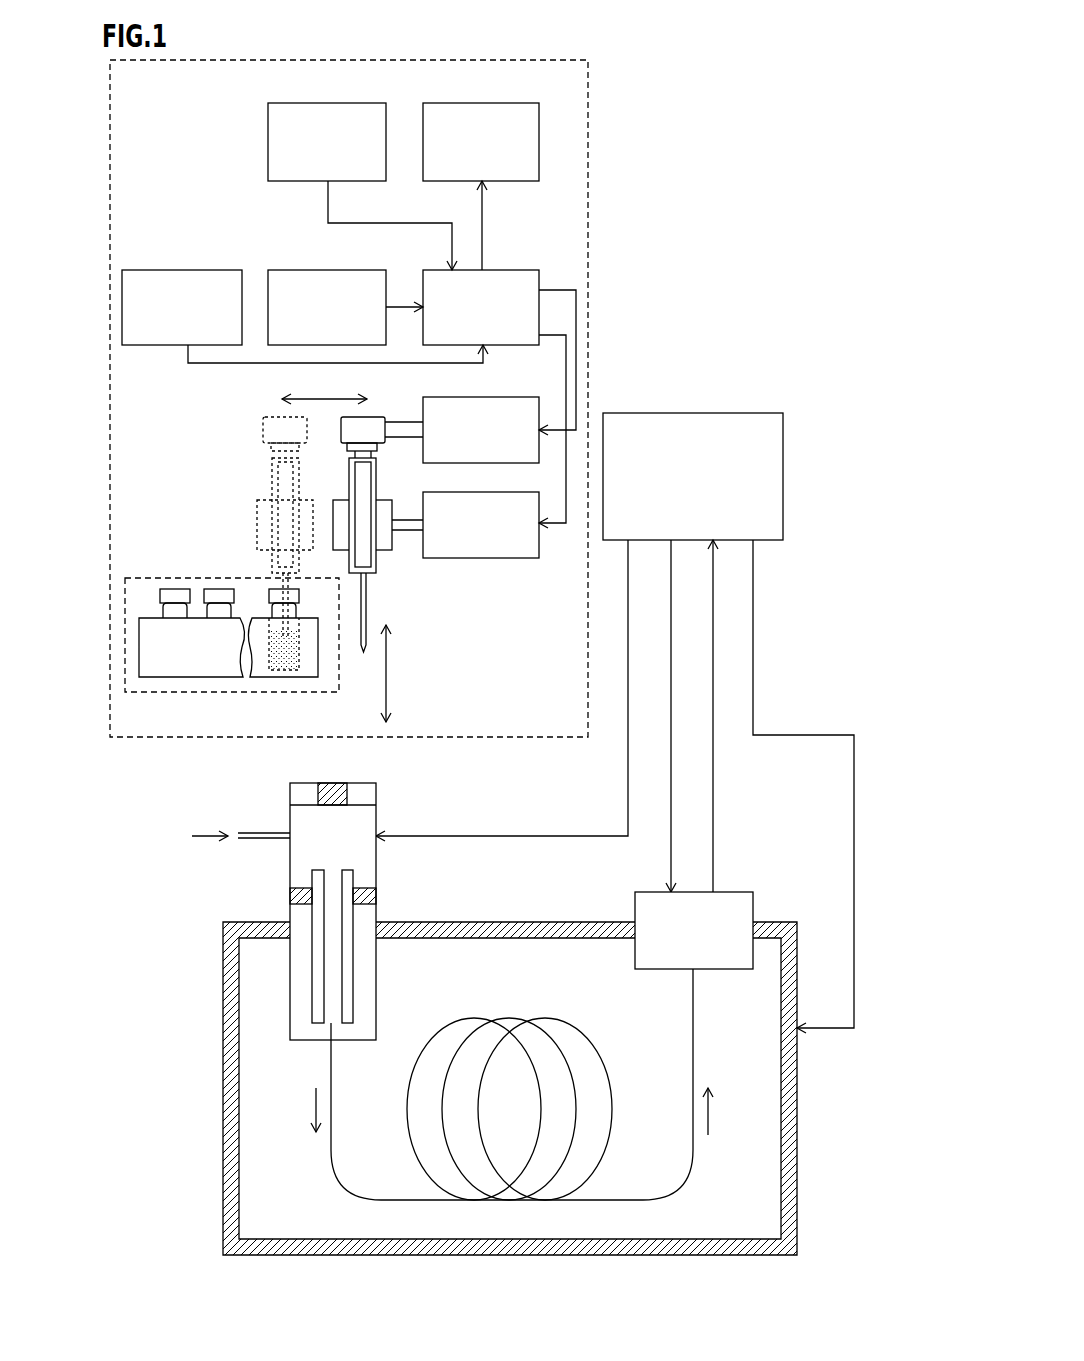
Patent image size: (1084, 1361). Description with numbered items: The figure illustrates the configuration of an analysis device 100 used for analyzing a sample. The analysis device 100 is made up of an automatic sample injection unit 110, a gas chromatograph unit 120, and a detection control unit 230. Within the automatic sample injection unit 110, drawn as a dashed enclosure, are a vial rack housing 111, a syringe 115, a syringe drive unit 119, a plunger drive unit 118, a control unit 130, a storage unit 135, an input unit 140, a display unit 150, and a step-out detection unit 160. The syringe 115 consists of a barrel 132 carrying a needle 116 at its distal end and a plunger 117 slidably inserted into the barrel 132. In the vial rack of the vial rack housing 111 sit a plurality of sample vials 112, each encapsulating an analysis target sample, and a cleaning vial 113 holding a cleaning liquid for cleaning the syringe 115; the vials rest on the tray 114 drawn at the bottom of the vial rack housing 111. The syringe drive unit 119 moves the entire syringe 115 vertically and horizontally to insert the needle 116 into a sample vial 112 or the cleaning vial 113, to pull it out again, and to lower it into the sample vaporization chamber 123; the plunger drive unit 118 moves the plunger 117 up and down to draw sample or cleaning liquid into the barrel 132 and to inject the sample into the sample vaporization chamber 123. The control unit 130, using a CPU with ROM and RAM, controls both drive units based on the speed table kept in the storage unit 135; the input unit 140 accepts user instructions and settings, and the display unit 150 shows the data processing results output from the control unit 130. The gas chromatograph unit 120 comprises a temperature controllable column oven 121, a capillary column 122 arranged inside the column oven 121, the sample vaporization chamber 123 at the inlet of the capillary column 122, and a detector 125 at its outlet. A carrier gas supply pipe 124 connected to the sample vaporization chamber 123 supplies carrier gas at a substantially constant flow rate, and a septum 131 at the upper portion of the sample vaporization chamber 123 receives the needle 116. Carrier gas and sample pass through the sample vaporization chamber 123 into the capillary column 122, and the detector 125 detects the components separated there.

The analysis device 100 is at (634, 335).
The automatic sample injection unit 110 is at (487, 58).
The vial rack housing 111 is at (143, 578).
The sample vial 112 is at (270, 595).
The cleaning vial 113 is at (172, 589).
The vial tray 114 is at (173, 677).
The syringe 115 is at (235, 438).
The needle 116 is at (367, 600).
The plunger 117 is at (377, 413).
The plunger drive unit 118 is at (483, 396).
The syringe drive unit 119 is at (483, 559).
The gas chromatograph unit 120 is at (514, 1028).
The column oven 121 is at (223, 1085).
The capillary column 122 is at (600, 1167).
The sample vaporization chamber 123 is at (377, 815).
The carrier gas supply pipe 124 is at (263, 843).
The detector 125 is at (738, 888).
The control unit 130 is at (497, 269).
The septum 131 is at (333, 782).
The barrel 132 is at (378, 480).
The storage unit 135 is at (342, 269).
The input unit 140 is at (342, 99).
The display unit 150 is at (497, 99).
The step-out detection unit 160 is at (192, 268).
The detection control unit 230 is at (735, 413).